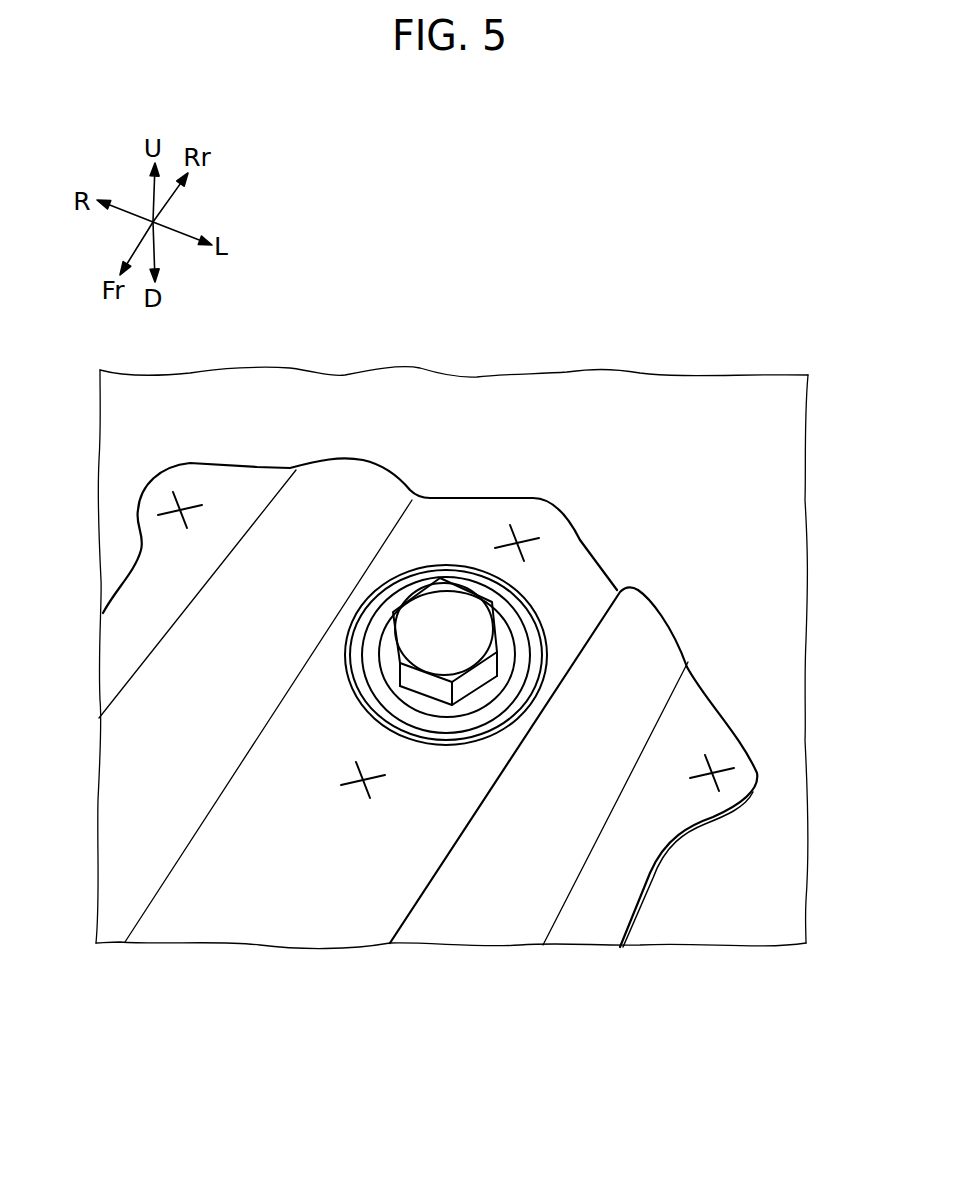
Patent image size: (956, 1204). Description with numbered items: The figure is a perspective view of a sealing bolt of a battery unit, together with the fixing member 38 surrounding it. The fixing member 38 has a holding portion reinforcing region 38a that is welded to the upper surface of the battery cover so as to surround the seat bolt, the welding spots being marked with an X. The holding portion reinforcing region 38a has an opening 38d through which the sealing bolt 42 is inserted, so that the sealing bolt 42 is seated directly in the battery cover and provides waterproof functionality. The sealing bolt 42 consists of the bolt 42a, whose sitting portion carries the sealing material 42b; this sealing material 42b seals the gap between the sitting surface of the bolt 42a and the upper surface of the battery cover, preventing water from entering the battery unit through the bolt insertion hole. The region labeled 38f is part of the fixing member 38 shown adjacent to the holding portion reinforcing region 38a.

The fixing member 38 is at (452, 707).
The flat portion of bracket 38f is at (262, 883).
The holding portion reinforcing region 38a is at (448, 535).
The opening 38d is at (348, 664).
The sealing bolt 42 is at (474, 582).
The bolt 42a is at (472, 622).
The sealing material 42b is at (519, 638).